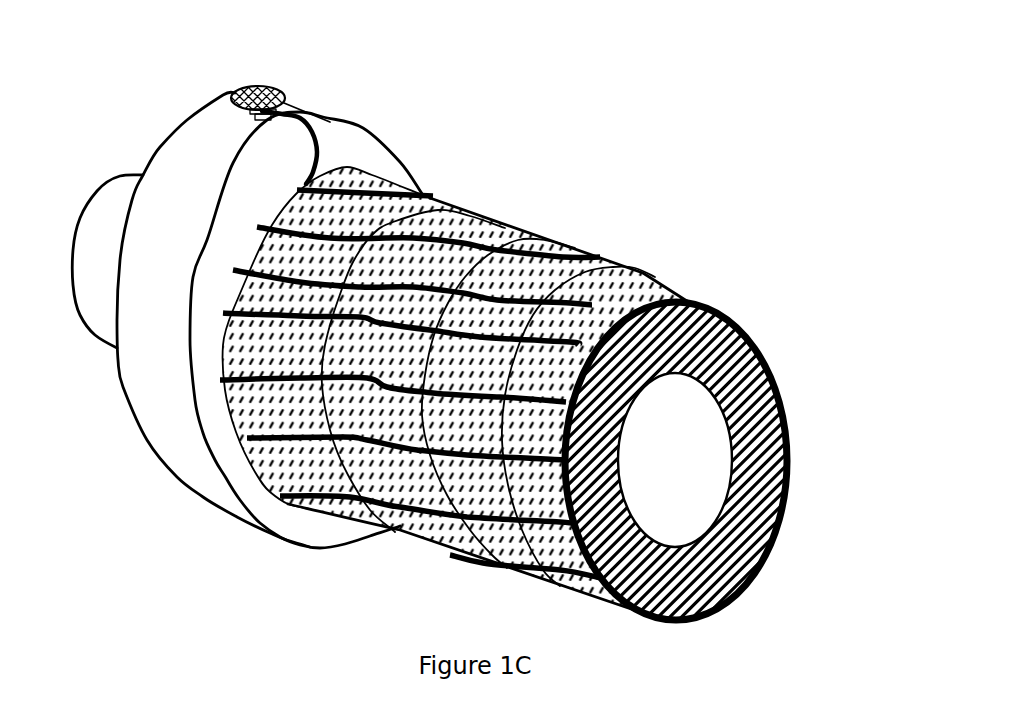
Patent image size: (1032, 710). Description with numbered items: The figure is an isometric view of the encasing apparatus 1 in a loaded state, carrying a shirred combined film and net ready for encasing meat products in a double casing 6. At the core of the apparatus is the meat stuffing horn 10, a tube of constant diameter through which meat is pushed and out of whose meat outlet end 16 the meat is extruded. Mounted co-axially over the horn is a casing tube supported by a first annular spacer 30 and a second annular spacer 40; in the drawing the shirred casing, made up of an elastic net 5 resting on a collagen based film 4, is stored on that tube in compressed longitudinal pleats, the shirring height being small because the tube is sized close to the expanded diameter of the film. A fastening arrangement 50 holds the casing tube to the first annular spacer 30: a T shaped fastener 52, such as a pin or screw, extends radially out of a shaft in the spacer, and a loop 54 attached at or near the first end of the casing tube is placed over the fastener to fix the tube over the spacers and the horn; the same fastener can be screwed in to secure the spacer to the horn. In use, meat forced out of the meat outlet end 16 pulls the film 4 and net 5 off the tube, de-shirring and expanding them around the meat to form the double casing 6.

The encasing apparatus 1 is at (694, 256).
The collagen based film 4 is at (641, 283).
The elastic net 5 is at (594, 255).
The double casing 6 is at (506, 193).
The meat stuffing horn 10 is at (121, 171).
The meat outlet end 16 is at (702, 478).
The first annular spacer 30 is at (187, 106).
The second annular spacer 40 is at (759, 436).
The fastening arrangement 50 is at (312, 104).
The T shaped fastener 52 is at (261, 84).
The loop 54 is at (322, 142).